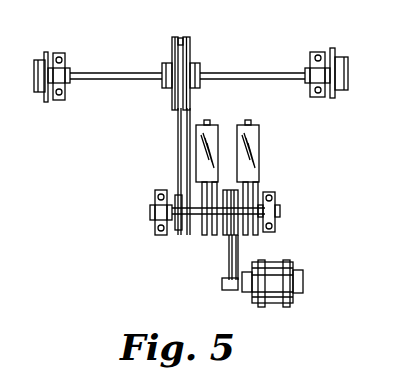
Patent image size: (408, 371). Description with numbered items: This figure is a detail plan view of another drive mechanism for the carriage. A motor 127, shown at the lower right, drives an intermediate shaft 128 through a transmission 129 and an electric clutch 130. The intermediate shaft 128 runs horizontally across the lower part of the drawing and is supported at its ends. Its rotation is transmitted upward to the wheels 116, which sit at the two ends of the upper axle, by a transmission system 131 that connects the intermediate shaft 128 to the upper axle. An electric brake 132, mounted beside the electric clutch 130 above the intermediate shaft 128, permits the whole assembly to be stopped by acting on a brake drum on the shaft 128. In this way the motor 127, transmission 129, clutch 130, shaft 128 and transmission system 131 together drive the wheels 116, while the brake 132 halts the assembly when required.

The wheels 116 is at (45, 101).
The motor 127 is at (292, 262).
The intermediate shaft 128 is at (192, 226).
The transmission 129 is at (226, 240).
The electric clutch 130 is at (244, 125).
The transmission system 131 is at (177, 128).
The electric brake 132 is at (201, 125).